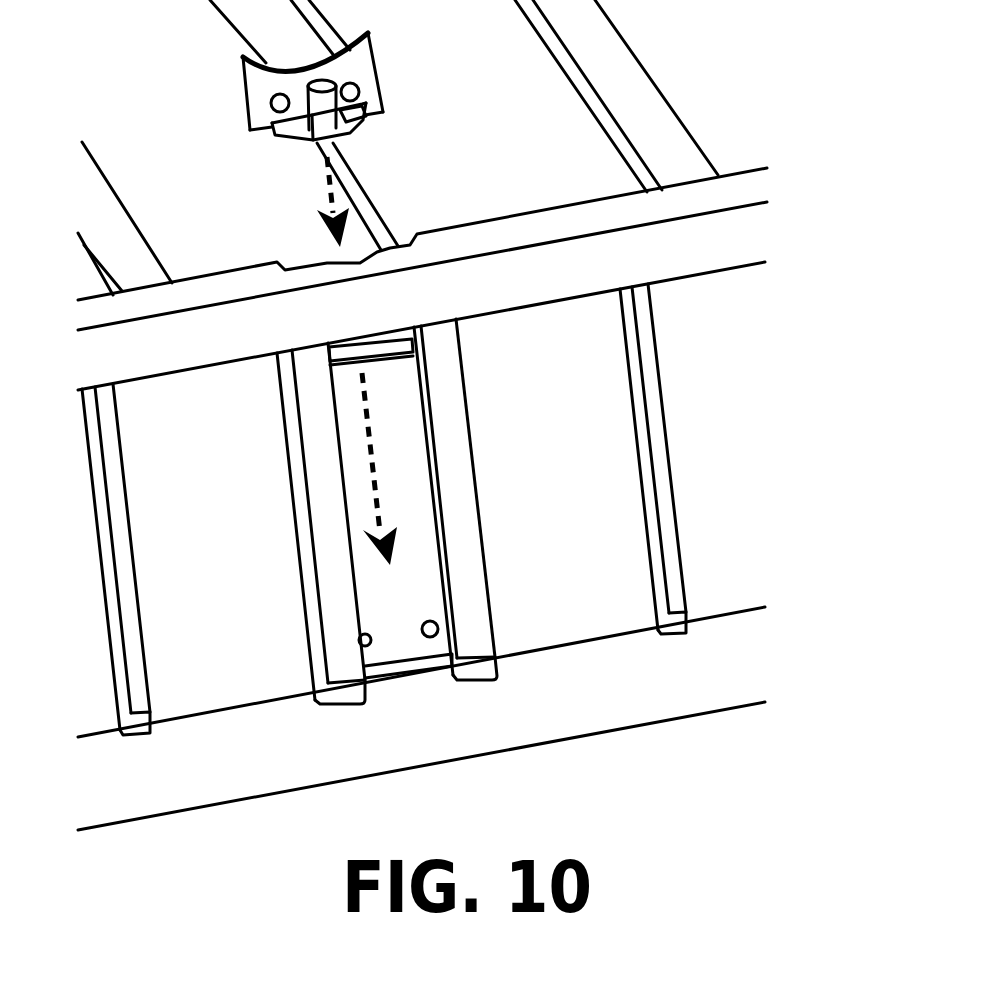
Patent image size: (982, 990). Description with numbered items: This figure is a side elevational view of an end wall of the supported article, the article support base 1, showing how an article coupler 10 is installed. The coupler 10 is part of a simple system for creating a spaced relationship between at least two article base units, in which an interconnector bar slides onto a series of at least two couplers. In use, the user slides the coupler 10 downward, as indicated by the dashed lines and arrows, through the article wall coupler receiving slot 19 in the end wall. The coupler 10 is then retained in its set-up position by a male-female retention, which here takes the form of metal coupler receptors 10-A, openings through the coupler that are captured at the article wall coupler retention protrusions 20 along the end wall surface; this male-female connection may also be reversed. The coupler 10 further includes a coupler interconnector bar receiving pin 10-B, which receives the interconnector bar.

The article support base 1 is at (692, 393).
The article coupler 10 is at (341, 113).
The metal coupler receptors 10-A is at (262, 108).
The coupler interconnector bar receiving pin 10-B is at (325, 115).
The article wall coupler receiving slot 19 is at (427, 443).
The article wall coupler retention protrusions 20 is at (417, 633).